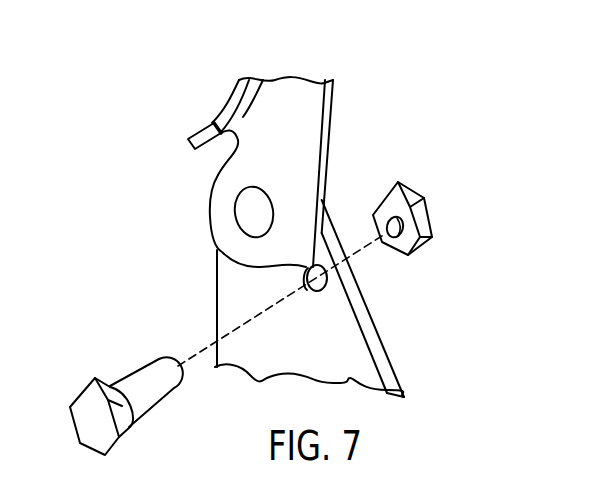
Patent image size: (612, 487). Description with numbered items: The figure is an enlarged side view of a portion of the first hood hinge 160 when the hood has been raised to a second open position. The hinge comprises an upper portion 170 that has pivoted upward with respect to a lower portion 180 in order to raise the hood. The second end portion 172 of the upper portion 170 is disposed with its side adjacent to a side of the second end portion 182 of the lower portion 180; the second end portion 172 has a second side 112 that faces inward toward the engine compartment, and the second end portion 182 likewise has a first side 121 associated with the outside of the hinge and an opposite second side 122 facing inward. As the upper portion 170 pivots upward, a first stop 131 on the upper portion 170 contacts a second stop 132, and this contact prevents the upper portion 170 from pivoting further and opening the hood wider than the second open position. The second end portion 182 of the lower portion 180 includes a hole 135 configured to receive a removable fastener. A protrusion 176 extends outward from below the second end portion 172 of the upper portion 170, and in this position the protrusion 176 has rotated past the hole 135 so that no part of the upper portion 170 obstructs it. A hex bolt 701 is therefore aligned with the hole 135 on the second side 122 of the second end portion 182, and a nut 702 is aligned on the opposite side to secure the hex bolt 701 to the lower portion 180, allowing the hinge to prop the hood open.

The second side 112 is at (288, 175).
The first side 121 is at (392, 333).
The second side 122 is at (343, 363).
The first stop 131 is at (234, 96).
The second stop 132 is at (207, 128).
The hole 135 is at (327, 278).
The first hood hinge 160 is at (362, 79).
The upper portion 170 is at (350, 140).
The second end portion 172 is at (212, 197).
The protrusion 176 is at (307, 270).
The lower portion 180 is at (413, 366).
The second end portion 182 is at (217, 252).
The hex bolt 701 is at (87, 373).
The nut 702 is at (437, 244).